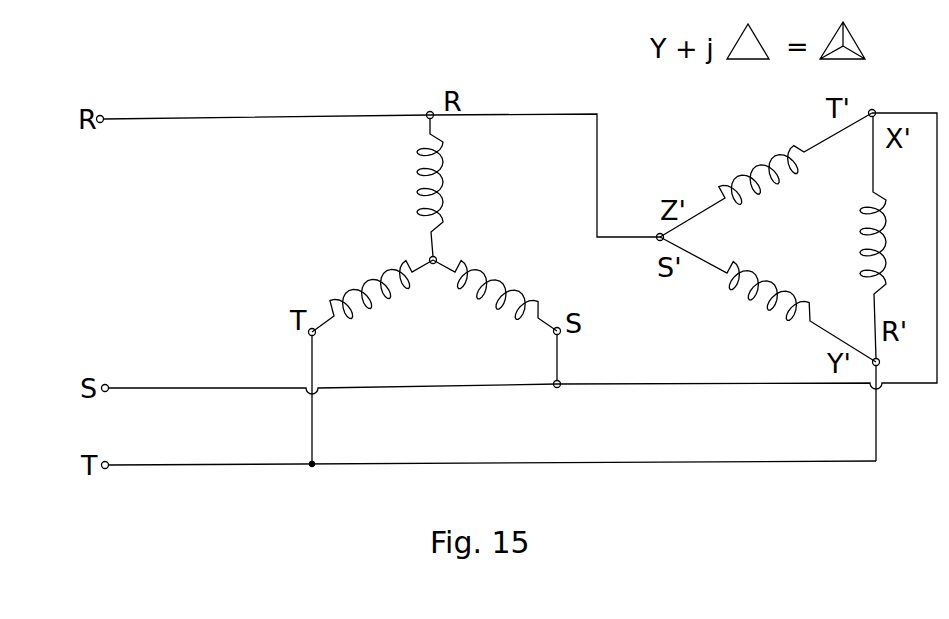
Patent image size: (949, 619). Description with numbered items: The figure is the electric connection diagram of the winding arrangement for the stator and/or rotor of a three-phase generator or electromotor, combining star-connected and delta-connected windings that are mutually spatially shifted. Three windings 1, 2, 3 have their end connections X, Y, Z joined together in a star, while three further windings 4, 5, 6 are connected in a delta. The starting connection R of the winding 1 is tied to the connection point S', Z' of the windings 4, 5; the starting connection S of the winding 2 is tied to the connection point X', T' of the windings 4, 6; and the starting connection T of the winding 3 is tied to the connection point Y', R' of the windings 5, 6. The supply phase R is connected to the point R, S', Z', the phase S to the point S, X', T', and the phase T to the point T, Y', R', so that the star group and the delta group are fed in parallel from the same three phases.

The winding 1 is at (440, 188).
The winding 2 is at (495, 295).
The winding 3 is at (372, 296).
The winding 4 is at (766, 175).
The winding 5 is at (768, 299).
The winding 6 is at (885, 238).